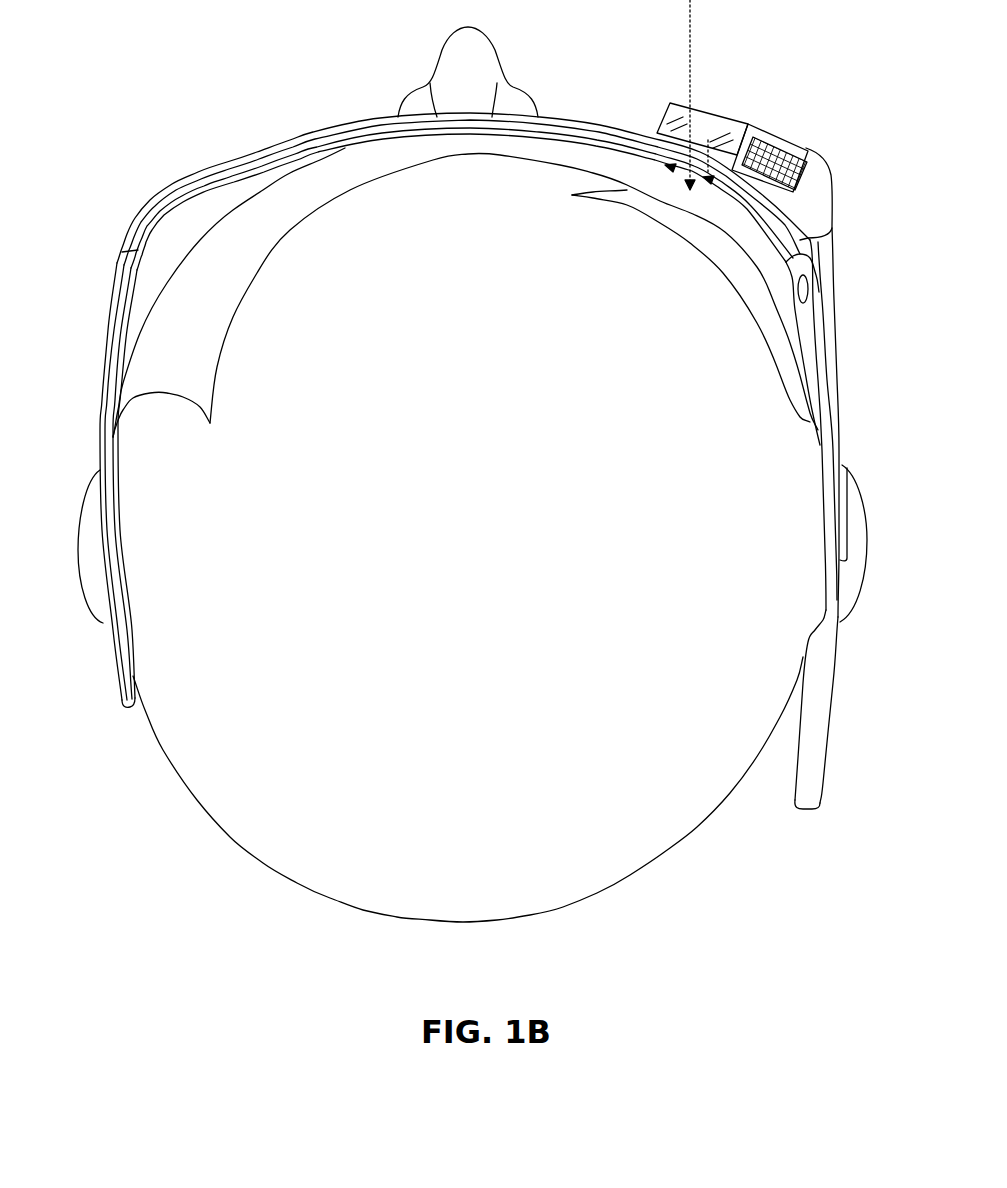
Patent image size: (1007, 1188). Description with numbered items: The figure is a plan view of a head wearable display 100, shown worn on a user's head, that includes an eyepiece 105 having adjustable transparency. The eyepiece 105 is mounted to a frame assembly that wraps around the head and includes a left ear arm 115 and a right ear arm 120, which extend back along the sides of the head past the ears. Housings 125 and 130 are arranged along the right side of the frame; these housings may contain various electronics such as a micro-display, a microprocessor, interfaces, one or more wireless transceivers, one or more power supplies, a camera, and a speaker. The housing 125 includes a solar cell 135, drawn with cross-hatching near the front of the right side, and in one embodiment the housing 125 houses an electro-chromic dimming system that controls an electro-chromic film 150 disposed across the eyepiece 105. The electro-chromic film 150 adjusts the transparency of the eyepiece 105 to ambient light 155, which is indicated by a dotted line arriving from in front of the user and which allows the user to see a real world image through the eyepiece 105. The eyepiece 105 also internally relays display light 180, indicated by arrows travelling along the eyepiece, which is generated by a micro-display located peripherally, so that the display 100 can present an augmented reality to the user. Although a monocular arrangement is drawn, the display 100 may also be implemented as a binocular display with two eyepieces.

The head wearable display 100 is at (188, 88).
The eyepiece 105 is at (655, 78).
The left ear arm 115 is at (112, 342).
The right ear arm 120 is at (830, 402).
The housing 125 is at (823, 258).
The housing 130 is at (822, 717).
The solar cell 135 is at (793, 167).
The electro-chromic film 150 is at (720, 110).
The ambient light 155 is at (690, 47).
The display light 180 is at (670, 143).